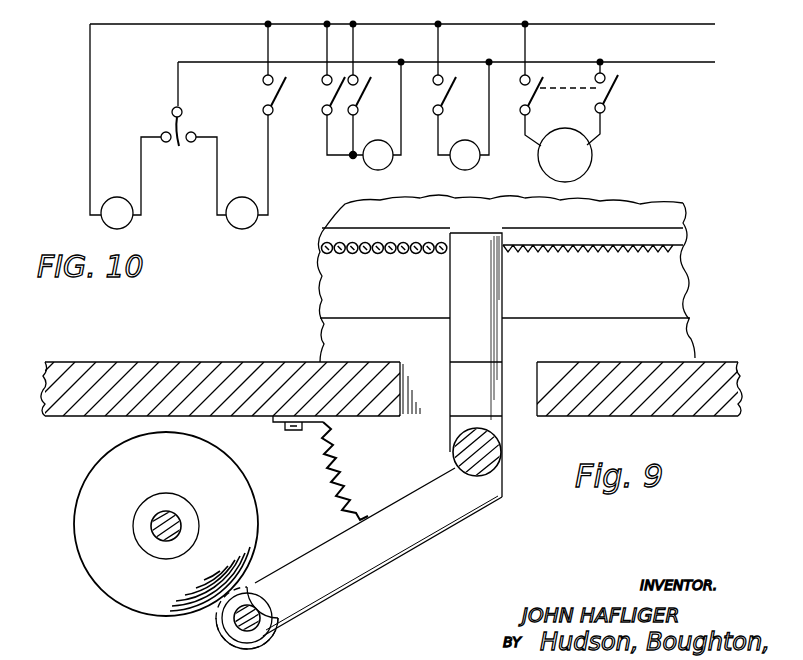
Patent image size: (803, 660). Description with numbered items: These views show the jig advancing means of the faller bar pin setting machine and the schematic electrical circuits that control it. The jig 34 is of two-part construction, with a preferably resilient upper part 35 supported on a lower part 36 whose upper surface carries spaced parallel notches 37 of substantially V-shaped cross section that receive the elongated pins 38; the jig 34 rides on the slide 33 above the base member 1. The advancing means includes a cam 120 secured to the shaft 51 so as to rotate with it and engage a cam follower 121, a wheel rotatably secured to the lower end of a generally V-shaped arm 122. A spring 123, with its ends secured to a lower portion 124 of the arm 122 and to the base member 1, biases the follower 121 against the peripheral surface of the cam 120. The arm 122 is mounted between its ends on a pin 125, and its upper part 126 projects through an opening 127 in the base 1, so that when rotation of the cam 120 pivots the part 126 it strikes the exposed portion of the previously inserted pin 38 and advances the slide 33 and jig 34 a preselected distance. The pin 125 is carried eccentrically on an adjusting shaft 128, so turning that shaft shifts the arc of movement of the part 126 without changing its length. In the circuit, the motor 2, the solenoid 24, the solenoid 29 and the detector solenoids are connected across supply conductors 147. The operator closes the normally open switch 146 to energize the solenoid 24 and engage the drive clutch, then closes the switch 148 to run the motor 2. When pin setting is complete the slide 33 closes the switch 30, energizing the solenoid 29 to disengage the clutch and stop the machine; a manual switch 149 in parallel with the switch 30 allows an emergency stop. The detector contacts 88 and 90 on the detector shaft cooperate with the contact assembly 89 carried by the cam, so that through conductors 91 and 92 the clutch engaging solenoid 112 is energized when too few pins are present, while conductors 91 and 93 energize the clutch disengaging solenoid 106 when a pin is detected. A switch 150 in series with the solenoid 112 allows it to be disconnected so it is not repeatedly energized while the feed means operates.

In FIG. 10, the conductors 147 is at (648, 24).
In FIG. 10, the switch 150 is at (268, 95).
In FIG. 10, the switch 30 is at (328, 97).
In FIG. 10, the switch 149 is at (358, 100).
In FIG. 10, the solenoid 29 is at (383, 168).
In FIG. 10, the switch 146 is at (443, 100).
In FIG. 10, the solenoid 24 is at (476, 165).
In FIG. 10, the switch 148 is at (609, 97).
In FIG. 10, the motor 2 is at (589, 162).
In FIG. 10, the conductor 92 is at (183, 108).
In FIG. 10, the contact assembly 89 is at (176, 146).
In FIG. 10, the contact 90 is at (162, 134).
In FIG. 10, the contact 88 is at (193, 142).
In FIG. 10, the conductor 93 is at (141, 186).
In FIG. 10, the conductor 91 is at (217, 188).
In FIG. 10, the solenoid 106 is at (128, 223).
In FIG. 10, the solenoid 112 is at (248, 229).
In FIG. 9, the base member 1 is at (660, 416).
In FIG. 9, the opening 127 is at (530, 417).
In FIG. 9, the jig 34 is at (731, 296).
In FIG. 9, the upper part 35 is at (682, 238).
In FIG. 9, the lower part 36 is at (676, 268).
In FIG. 9, the pins 38 is at (414, 254).
In FIG. 9, the notches 37 is at (565, 252).
In FIG. 9, the slide 33 is at (690, 336).
In FIG. 9, the upper part of the arm 126 is at (452, 294).
In FIG. 9, the pin 125 is at (500, 452).
In FIG. 9, the shaft 128 is at (483, 477).
In FIG. 9, the arm 122 is at (415, 555).
In FIG. 9, the lower portion of the arm 124 is at (345, 588).
In FIG. 9, the spring 123 is at (352, 468).
In FIG. 9, the cam follower 121 is at (262, 640).
In FIG. 9, the cam 120 is at (74, 501).
In FIG. 9, the shaft 51 is at (172, 516).